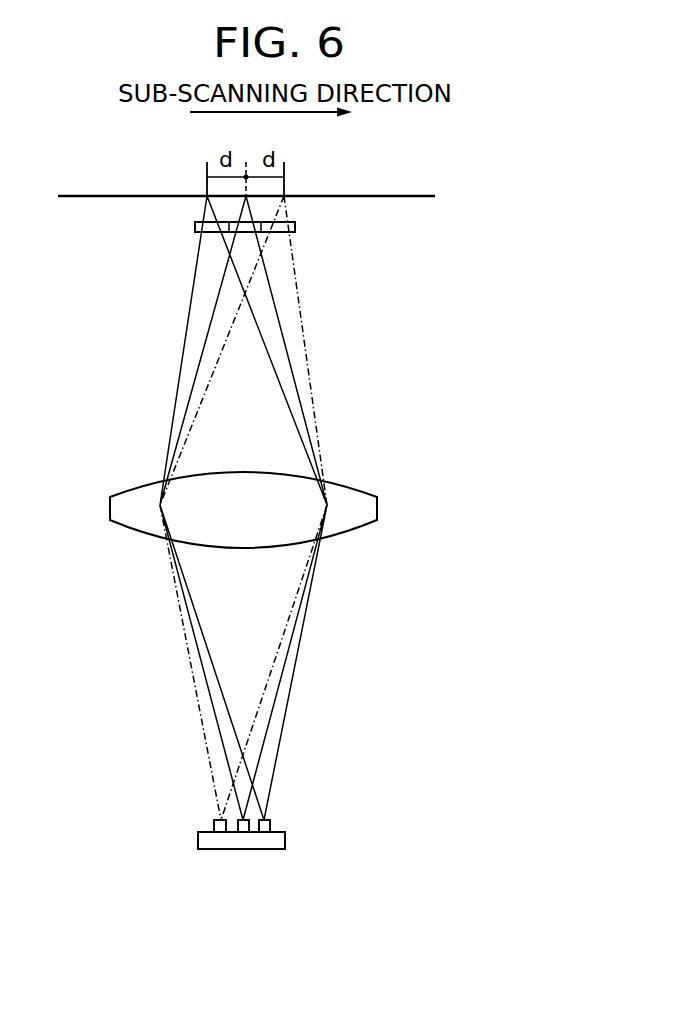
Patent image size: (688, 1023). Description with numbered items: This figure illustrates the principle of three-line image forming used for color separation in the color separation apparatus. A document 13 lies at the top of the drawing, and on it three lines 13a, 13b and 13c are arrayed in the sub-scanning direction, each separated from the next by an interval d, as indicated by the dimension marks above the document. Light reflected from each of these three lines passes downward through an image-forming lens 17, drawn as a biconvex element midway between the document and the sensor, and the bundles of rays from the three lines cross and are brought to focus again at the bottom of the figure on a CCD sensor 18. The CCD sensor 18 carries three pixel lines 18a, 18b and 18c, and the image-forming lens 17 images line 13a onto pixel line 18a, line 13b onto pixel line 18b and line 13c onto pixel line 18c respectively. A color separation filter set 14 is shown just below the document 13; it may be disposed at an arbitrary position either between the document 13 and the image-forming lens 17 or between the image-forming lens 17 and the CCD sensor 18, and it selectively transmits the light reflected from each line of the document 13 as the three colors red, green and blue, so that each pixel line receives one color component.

The document 13 is at (408, 196).
The first line 13a is at (207, 197).
The second line 13b is at (246, 197).
The third line 13c is at (285, 197).
The color separation filter set 14 is at (295, 228).
The image-forming lens 17 is at (377, 512).
The CCD sensor 18 is at (285, 838).
The first pixel line 18a is at (214, 825).
The second pixel line 18b is at (242, 832).
The third pixel line 18c is at (267, 832).